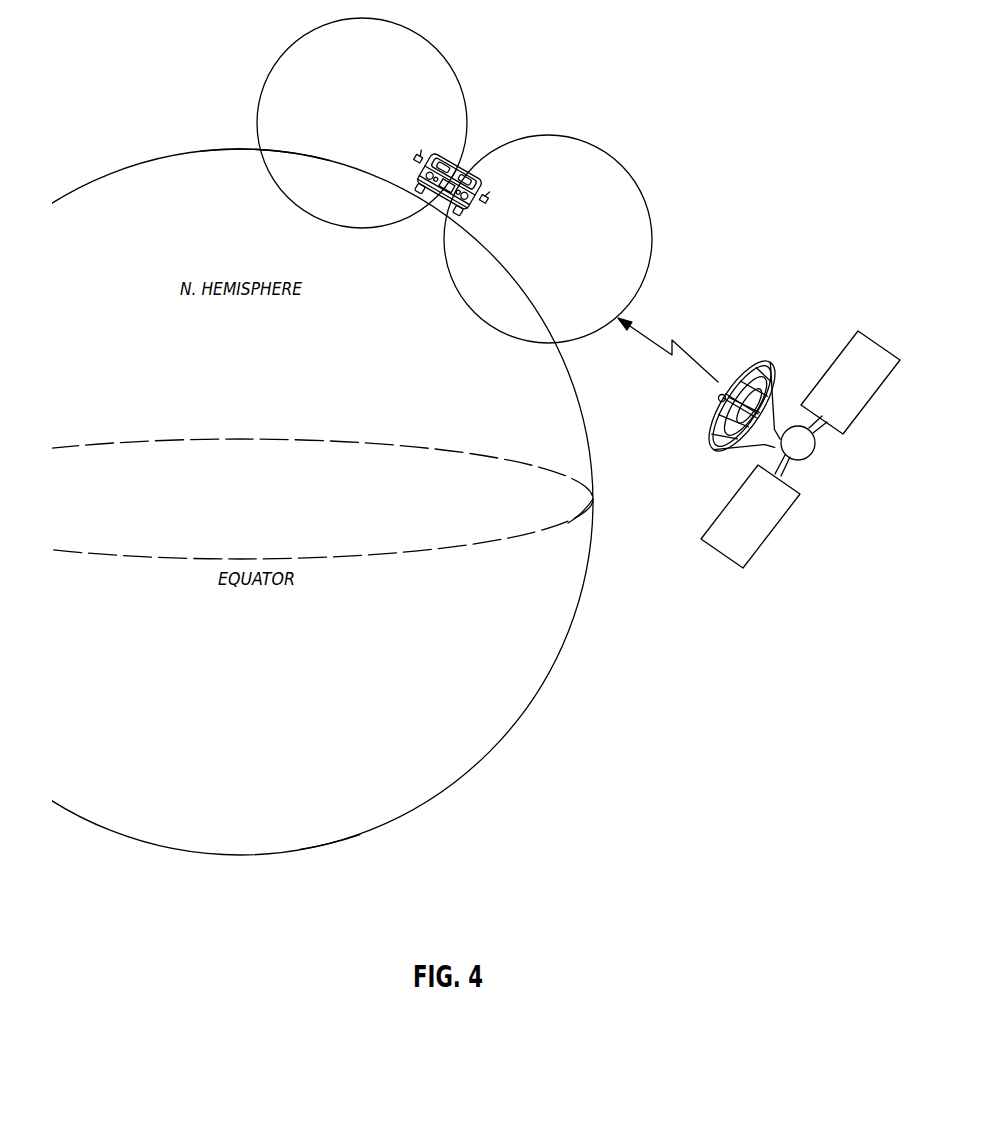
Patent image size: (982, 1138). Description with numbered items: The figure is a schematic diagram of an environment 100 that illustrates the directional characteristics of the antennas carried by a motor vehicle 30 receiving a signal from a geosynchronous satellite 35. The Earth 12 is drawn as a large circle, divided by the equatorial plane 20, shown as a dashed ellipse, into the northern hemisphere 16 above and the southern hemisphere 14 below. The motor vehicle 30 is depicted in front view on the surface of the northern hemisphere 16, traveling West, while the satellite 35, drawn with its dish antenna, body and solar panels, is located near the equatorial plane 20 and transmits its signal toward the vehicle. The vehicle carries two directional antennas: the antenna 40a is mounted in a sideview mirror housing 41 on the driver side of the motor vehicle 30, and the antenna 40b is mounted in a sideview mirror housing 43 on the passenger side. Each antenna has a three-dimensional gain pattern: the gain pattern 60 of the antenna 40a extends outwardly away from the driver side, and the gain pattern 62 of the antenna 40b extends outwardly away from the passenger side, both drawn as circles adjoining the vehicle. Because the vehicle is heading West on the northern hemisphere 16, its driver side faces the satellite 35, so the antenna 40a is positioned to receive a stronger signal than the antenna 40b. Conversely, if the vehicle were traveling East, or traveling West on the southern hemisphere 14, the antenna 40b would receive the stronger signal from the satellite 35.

The Earth 12 is at (472, 768).
The southern hemisphere 14 is at (330, 846).
The northern hemisphere 16 is at (287, 155).
The equatorial plane 20 is at (568, 523).
The motor vehicle 30 is at (470, 176).
The geosynchronous satellite 35 is at (830, 370).
The antenna 40a is at (483, 200).
The antenna 40b is at (427, 160).
The sideview mirror housing 41 is at (483, 203).
The sideview mirror housing 43 is at (423, 162).
The antenna gain pattern 60 is at (628, 175).
The antenna gain pattern 62 is at (447, 63).
The environment 100 is at (665, 100).